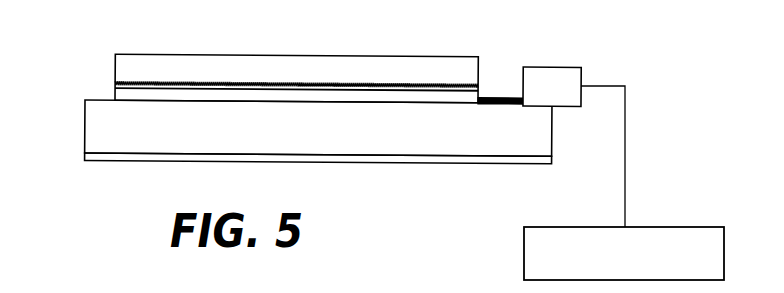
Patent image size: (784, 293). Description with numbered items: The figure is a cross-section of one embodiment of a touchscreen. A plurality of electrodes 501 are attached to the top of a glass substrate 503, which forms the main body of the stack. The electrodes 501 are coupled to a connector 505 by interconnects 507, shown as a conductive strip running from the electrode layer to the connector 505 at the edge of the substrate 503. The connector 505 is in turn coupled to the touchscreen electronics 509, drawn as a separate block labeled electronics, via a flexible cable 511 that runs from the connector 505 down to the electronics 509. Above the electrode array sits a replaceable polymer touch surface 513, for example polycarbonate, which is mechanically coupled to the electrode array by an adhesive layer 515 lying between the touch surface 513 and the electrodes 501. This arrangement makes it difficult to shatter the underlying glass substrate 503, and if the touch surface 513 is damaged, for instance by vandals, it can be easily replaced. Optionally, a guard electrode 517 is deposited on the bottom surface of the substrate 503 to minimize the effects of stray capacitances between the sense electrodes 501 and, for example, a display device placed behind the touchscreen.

The electrodes 501 is at (115, 92).
The substrate 503 is at (342, 137).
The connector 505 is at (552, 75).
The interconnects 507 is at (500, 96).
The touchscreen electronics 509 is at (582, 227).
The flexible cable 511 is at (625, 107).
The touch surface 513 is at (304, 65).
The adhesive layer 515 is at (115, 81).
The guard electrode 517 is at (106, 163).